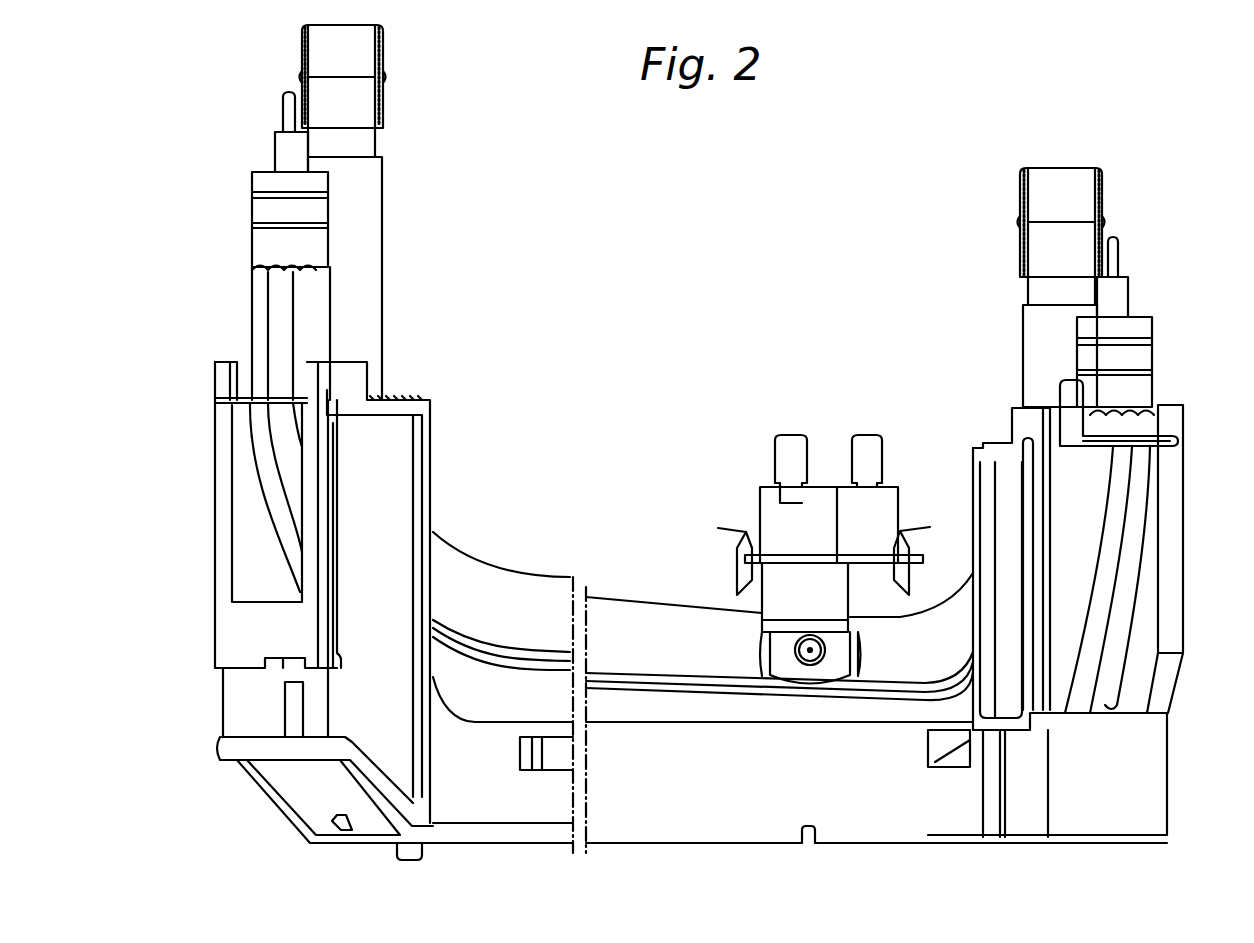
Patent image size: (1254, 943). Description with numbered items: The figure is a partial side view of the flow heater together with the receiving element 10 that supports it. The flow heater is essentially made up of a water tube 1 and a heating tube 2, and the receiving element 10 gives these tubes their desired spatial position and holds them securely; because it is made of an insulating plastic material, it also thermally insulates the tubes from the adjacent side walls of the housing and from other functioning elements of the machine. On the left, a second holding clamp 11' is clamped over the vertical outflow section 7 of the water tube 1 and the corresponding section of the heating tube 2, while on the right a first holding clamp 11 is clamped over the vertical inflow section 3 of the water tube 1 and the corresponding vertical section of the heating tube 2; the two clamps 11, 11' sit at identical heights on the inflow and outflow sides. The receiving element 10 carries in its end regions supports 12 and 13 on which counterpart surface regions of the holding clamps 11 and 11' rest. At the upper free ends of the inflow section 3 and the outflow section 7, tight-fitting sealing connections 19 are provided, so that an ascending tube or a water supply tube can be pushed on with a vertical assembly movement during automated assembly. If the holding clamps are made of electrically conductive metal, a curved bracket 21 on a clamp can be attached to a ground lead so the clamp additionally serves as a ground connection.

The water tube 1 is at (390, 209).
The heating tube 2 is at (277, 303).
The vertical inflow section 3 is at (1033, 330).
The vertical outflow section 7 is at (360, 267).
The receiving element 10 is at (417, 488).
The first holding clamp 11 is at (1140, 533).
The second holding clamp 11' is at (357, 429).
The support 12 is at (1164, 447).
The support 13 is at (224, 408).
The sealing connection 19 is at (383, 53).
The curved bracket 21 is at (1068, 394).